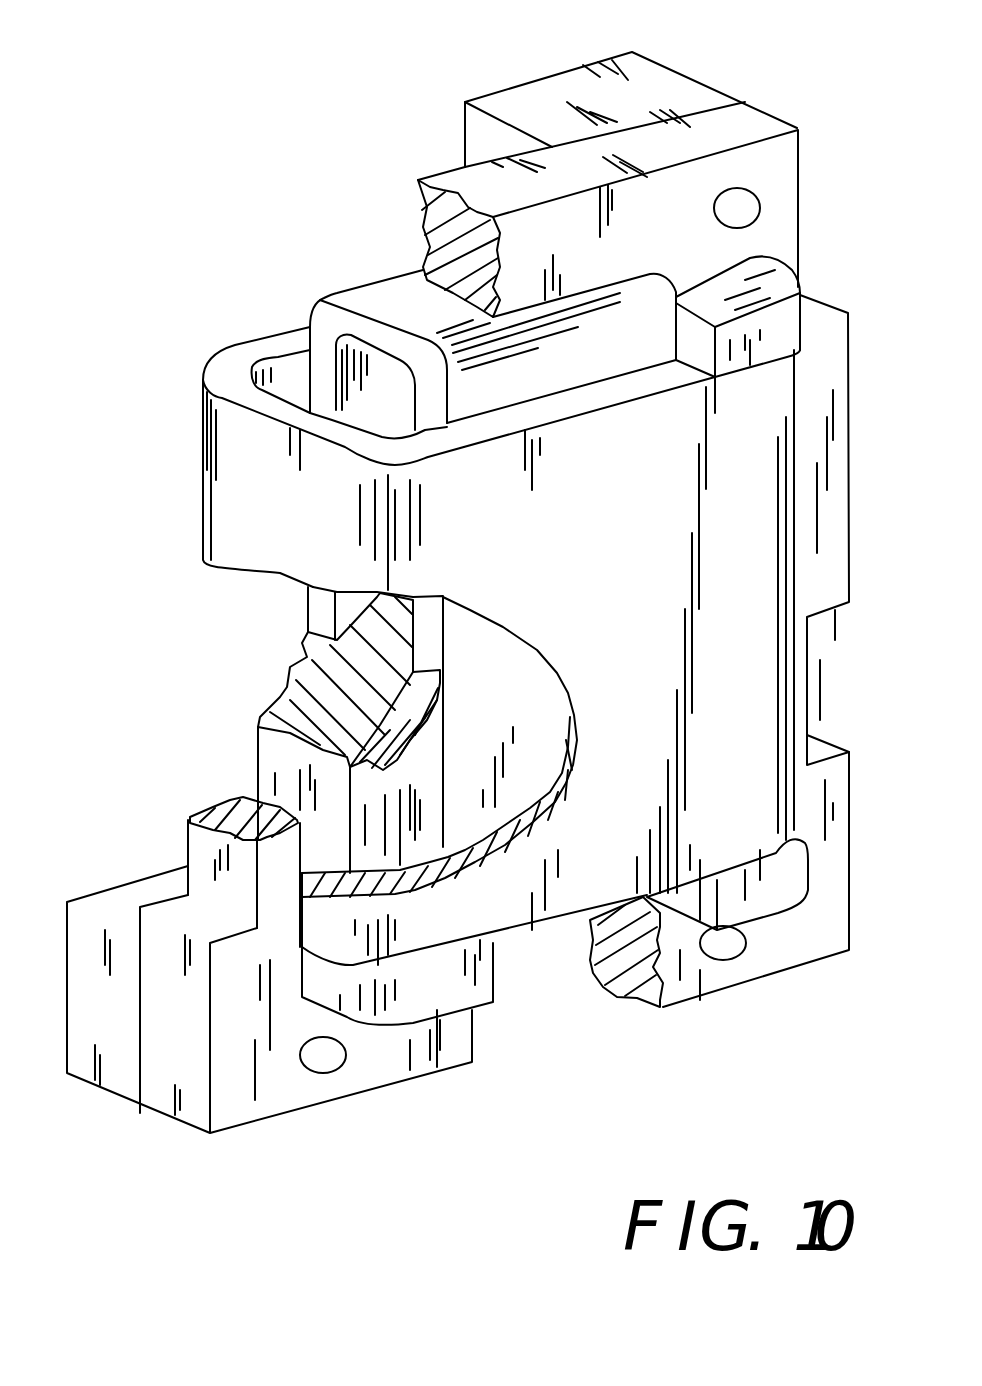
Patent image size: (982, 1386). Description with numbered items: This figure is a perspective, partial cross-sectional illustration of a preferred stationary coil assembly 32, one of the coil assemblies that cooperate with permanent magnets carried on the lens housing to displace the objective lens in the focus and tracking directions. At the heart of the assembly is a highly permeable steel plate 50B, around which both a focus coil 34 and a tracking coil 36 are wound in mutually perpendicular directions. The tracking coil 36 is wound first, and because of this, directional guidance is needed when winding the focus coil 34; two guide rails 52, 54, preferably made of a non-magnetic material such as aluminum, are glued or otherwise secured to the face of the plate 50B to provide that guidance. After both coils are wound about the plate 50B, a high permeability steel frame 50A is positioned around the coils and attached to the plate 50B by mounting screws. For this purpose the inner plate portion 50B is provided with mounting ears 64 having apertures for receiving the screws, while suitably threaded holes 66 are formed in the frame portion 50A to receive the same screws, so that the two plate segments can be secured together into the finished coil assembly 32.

The stationary coil assembly 32 is at (170, 167).
The focus coil 34 is at (220, 372).
The tracking coil 36 is at (328, 318).
The frame 50A is at (737, 120).
The plate 50B is at (313, 647).
The guide rail 52 is at (773, 280).
The guide rail 54 is at (423, 703).
The mounting ear 64 is at (667, 83).
The threaded hole 66 is at (715, 205).